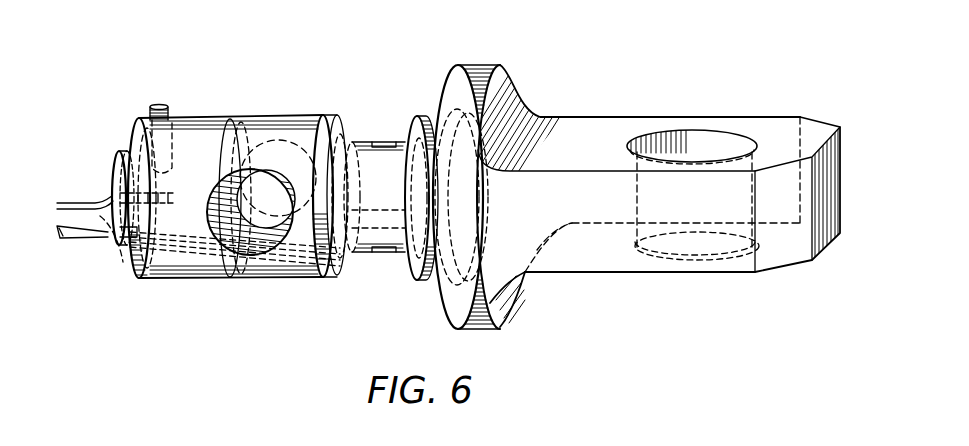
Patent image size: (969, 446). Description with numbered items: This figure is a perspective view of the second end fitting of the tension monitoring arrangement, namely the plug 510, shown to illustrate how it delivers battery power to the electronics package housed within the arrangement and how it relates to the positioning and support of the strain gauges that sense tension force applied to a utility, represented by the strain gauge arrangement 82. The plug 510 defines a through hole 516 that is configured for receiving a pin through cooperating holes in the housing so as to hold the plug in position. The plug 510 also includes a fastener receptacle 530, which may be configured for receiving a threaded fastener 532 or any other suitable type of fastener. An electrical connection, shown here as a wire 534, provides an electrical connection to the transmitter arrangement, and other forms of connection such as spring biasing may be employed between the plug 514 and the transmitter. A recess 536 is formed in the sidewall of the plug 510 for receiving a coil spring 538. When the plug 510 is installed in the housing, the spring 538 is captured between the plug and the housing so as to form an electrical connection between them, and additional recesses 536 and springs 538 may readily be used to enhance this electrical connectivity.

The plug 510 is at (591, 287).
The plug 514 is at (705, 158).
The through hole 516 is at (268, 256).
The fastener receptacle 530 is at (163, 258).
The threaded fastener 532 is at (124, 262).
The wire 534 is at (93, 200).
The recess 536 is at (150, 137).
The coil spring 538 is at (167, 107).
The strain gauge arrangement 82 is at (380, 254).